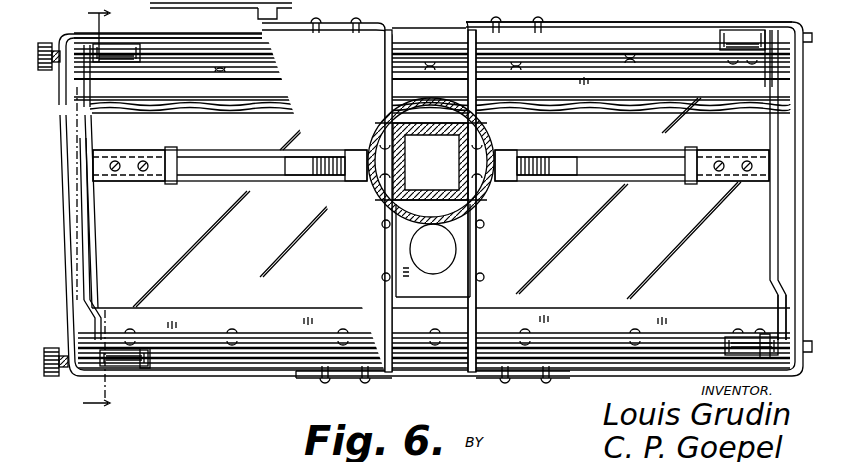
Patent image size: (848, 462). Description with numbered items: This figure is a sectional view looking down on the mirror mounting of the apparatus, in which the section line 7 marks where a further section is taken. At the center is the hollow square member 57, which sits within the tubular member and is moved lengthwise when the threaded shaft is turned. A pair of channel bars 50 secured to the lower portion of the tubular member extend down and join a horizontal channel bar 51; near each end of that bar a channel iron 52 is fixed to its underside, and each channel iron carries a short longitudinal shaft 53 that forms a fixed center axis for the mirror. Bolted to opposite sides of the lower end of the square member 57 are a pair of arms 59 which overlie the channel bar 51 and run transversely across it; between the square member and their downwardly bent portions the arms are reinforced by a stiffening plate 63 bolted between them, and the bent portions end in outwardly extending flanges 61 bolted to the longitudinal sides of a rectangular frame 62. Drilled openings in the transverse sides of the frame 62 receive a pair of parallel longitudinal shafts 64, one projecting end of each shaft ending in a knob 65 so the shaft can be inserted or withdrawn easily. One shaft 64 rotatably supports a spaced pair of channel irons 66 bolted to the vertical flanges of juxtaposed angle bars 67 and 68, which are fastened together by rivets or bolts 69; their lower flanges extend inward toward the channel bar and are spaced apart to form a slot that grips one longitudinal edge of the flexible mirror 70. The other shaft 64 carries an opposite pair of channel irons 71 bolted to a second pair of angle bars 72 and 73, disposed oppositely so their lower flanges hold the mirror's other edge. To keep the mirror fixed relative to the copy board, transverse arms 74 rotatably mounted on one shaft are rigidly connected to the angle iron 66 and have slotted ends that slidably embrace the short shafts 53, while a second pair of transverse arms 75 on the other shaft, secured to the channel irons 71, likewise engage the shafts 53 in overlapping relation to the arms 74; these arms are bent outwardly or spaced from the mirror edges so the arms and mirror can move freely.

The section line 7- 7 is at (103, 208).
The channel bars 50 is at (350, 148).
The horizontal channel bar 51 is at (252, 150).
The channel irons 52 is at (160, 150).
The short longitudinal shaft 53 is at (188, 150).
The hollow square member 57 is at (456, 128).
The arms 59 is at (390, 242).
The outwardly extending flanges 61 is at (370, 24).
The rectangular frame 62 is at (600, 22).
The stiffening plate 63 is at (421, 282).
The shafts 64 is at (345, 78).
The knob 65 is at (46, 42).
The channel irons 66 is at (137, 45).
The angle bar 67 is at (190, 64).
The angle bar 68 is at (143, 72).
The rivets or bolts 69 is at (228, 71).
The flexible mirror 70 is at (441, 203).
The channel irons 71 is at (146, 352).
The angle bar 72 is at (208, 336).
The angle bar 73 is at (255, 338).
The transverse arms 74 is at (84, 76).
The transverse arms 75 is at (78, 302).